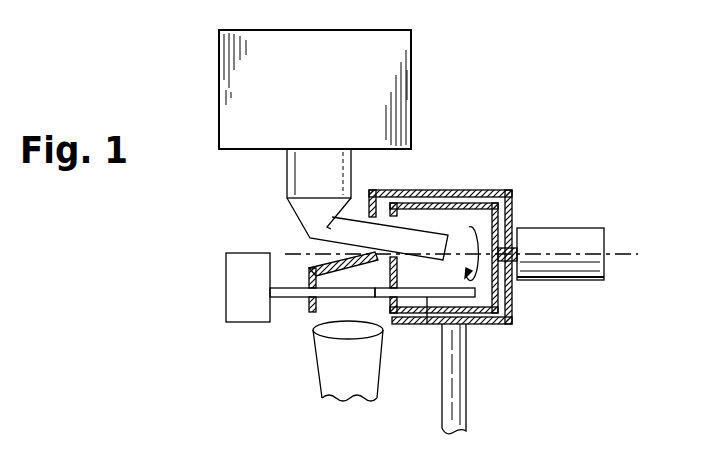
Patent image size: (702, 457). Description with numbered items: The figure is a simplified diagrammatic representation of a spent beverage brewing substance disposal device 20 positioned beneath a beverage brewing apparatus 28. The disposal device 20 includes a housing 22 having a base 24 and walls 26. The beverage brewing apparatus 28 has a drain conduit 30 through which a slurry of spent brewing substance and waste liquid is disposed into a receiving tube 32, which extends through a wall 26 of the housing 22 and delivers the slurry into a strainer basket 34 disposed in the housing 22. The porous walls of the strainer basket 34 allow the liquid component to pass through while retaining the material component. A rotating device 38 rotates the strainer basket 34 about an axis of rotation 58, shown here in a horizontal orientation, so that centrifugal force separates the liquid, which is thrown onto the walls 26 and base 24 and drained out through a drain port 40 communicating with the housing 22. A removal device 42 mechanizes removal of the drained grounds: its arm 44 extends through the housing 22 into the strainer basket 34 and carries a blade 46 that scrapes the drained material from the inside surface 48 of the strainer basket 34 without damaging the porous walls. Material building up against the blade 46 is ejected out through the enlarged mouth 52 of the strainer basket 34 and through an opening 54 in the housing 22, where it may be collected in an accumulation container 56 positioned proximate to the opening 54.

The disposal device 20 is at (573, 150).
The housing 22 is at (471, 251).
The base 24 is at (470, 324).
The walls 26 is at (368, 193).
The beverage brewing apparatus 28 is at (219, 83).
The drain conduit 30 is at (287, 177).
The receiving tube 32 is at (296, 214).
The strainer basket 34 is at (499, 328).
The rotating device 38 is at (595, 285).
The drain port 40 is at (468, 388).
The removal device 42 is at (222, 305).
The arm 44 is at (287, 298).
The blade 46 is at (429, 324).
The inside surface 48 is at (455, 217).
The enlarged mouth 52 is at (394, 300).
The opening 54 is at (312, 313).
The accumulation container 56 is at (330, 373).
The axis of rotation 58 is at (624, 251).